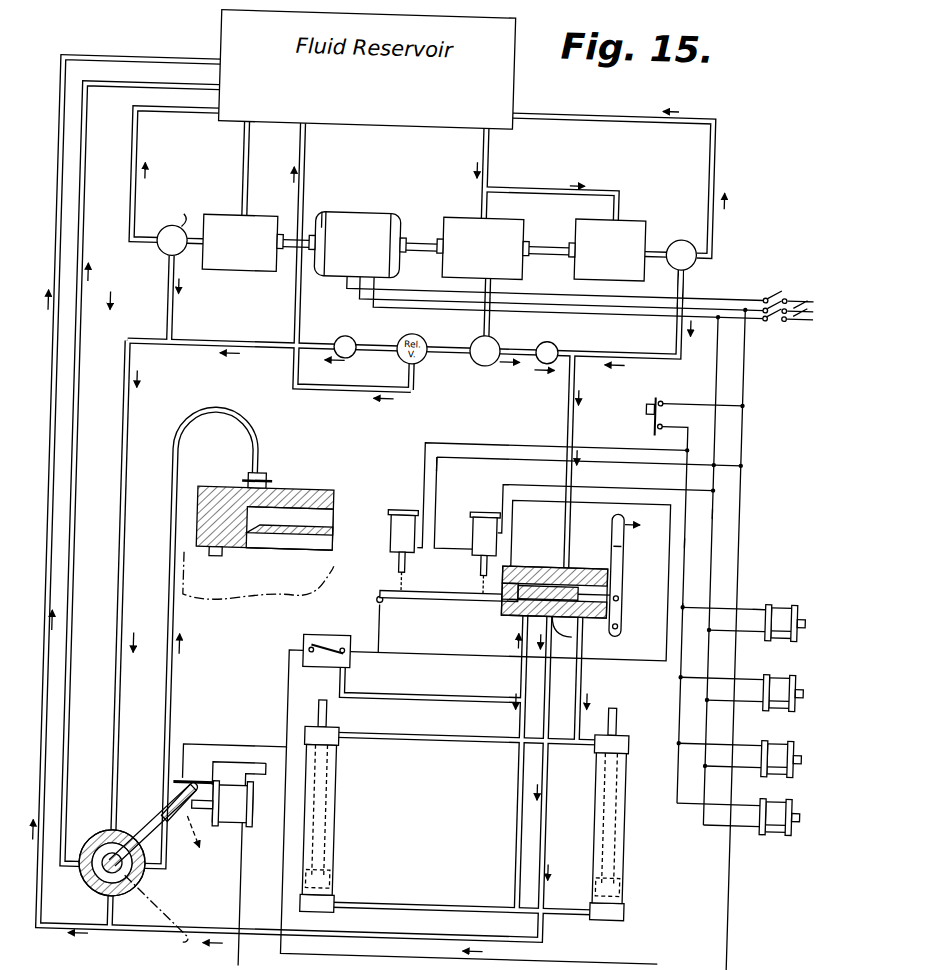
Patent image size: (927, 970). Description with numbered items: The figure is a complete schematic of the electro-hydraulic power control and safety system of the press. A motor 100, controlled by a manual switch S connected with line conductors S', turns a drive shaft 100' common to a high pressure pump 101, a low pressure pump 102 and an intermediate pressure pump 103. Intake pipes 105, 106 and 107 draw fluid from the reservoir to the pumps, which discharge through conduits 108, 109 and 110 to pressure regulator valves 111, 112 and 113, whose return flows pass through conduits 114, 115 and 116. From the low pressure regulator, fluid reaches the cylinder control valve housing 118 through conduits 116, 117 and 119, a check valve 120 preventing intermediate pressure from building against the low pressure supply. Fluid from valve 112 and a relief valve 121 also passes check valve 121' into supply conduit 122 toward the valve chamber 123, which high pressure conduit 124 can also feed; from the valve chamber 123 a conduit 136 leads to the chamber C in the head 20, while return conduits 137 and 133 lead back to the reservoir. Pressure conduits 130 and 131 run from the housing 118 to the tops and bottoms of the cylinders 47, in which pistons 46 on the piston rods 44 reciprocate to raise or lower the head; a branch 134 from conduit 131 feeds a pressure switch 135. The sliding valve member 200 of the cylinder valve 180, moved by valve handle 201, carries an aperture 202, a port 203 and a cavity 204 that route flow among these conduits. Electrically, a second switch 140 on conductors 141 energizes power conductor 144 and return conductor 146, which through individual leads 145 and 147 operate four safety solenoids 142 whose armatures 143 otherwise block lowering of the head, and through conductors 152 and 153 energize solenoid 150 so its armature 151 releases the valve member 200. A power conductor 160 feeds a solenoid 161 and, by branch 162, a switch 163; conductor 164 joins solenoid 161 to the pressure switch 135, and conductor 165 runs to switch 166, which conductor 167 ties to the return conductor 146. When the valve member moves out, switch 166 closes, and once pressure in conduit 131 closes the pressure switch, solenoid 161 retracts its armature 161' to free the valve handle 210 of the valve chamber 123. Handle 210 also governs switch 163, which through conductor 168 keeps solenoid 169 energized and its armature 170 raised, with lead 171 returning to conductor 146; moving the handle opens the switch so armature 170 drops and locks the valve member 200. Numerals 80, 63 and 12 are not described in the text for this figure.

The fluid return conduit 133 is at (170, 60).
The second return conduit 137 is at (96, 90).
The conduit 114 is at (134, 150).
The conduit 124 is at (166, 318).
The supply conduit 122 is at (132, 420).
The conduit 117 is at (645, 340).
The pressure regulator valve 113 is at (693, 254).
The intake pipe 105 is at (237, 156).
The conduit 115 is at (300, 146).
The relief valve 121 is at (431, 378).
The intake pipe 106 is at (478, 150).
The intake pipe 107 is at (592, 178).
The discharge conduit 109 is at (480, 326).
The conduit 116 is at (710, 148).
The conduit 119 is at (576, 384).
The pressure conduit 131 is at (529, 722).
The pressure conduit 130 is at (592, 680).
The branch 134 is at (476, 698).
The conduit 136 is at (252, 436).
The high pressure pump 101 is at (240, 242).
The motor 100 is at (357, 245).
The drive shaft 100' is at (340, 205).
The low pressure pump 102 is at (483, 248).
The intermediate pressure pump 103 is at (610, 250).
The pressure regulator valve 111 is at (157, 255).
The discharge conduit 108 is at (169, 212).
The pressure regulator valve 112 is at (478, 364).
The discharge conduit 110 is at (660, 240).
The check valve 121' is at (333, 334).
The check valve 120 is at (552, 338).
The manual switch S is at (567, 288).
The line conductors S' is at (800, 296).
The second manual control switch 140 is at (654, 392).
The conductors 141 is at (722, 376).
The power conductor 160 is at (747, 457).
The conductor 152 is at (528, 440).
The conductor 153 is at (468, 462).
The lead 171 is at (556, 481).
The conductor 167 is at (490, 652).
The conductor 165 is at (383, 655).
The switch 166 is at (383, 598).
The valve member 200 is at (440, 599).
The return conductor 146 is at (722, 505).
The power conductor 144 is at (695, 535).
The individual leads 145 is at (700, 598).
The individual solenoid leads 147 is at (770, 598).
The armatures 143 is at (809, 596).
The safety solenoids 142 is at (800, 667).
The cylinder control valve housing 118 is at (548, 563).
The port 203 is at (512, 600).
The aperture 202 is at (588, 590).
The cavity 204 is at (586, 612).
The cylinder valve 180 is at (610, 560).
The valve handle 201 is at (631, 545).
The solenoid 150 is at (396, 543).
The armature 151 is at (404, 566).
The solenoid 169 is at (478, 516).
The armature 170 is at (486, 560).
The pressure switch 135 is at (338, 637).
The conductor 164 is at (298, 698).
The conductor 168 is at (297, 888).
The branch 162 is at (260, 764).
The switch 163 is at (198, 782).
The solenoid 161 is at (222, 803).
The armature 161' is at (215, 836).
The valve chamber 123 is at (121, 840).
The valve handle 210 is at (170, 810).
The head 20 is at (240, 488).
The liner 80 is at (345, 530).
The chamber C is at (320, 508).
The fitting 63 is at (272, 500).
The machine base 12 is at (258, 596).
The piston rods 44 is at (345, 716).
The cylinders 47 is at (350, 800).
The pistons 46 is at (346, 880).